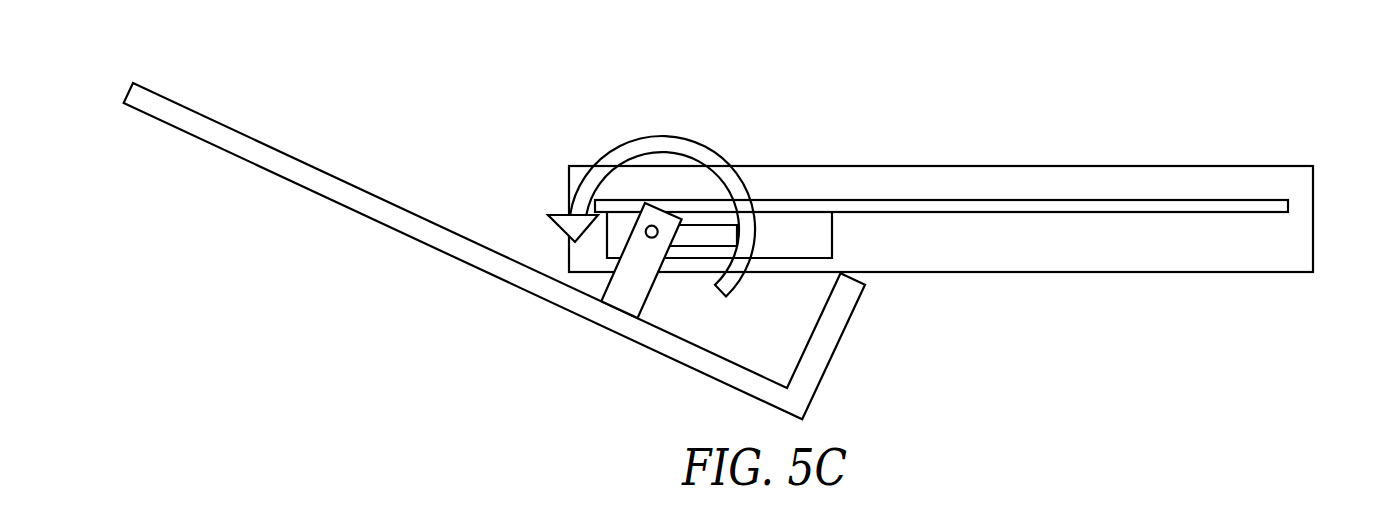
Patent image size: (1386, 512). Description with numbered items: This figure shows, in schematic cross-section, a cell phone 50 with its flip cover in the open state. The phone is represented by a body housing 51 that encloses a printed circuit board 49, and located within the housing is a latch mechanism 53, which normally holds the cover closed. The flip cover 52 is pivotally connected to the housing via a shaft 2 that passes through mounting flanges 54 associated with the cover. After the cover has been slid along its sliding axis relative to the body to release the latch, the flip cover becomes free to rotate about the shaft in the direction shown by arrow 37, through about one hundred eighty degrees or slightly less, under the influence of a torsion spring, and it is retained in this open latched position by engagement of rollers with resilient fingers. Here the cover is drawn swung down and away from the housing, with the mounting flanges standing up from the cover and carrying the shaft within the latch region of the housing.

The cell phone 50 is at (718, 232).
The flip cover 52 is at (476, 260).
The body housing 51 is at (923, 177).
The printed circuit board 49 is at (990, 207).
The latch mechanism 53 is at (775, 253).
The mounting flanges 54 is at (638, 292).
The shaft 2 is at (658, 232).
The arrow indicating rotational direction 37 is at (651, 204).